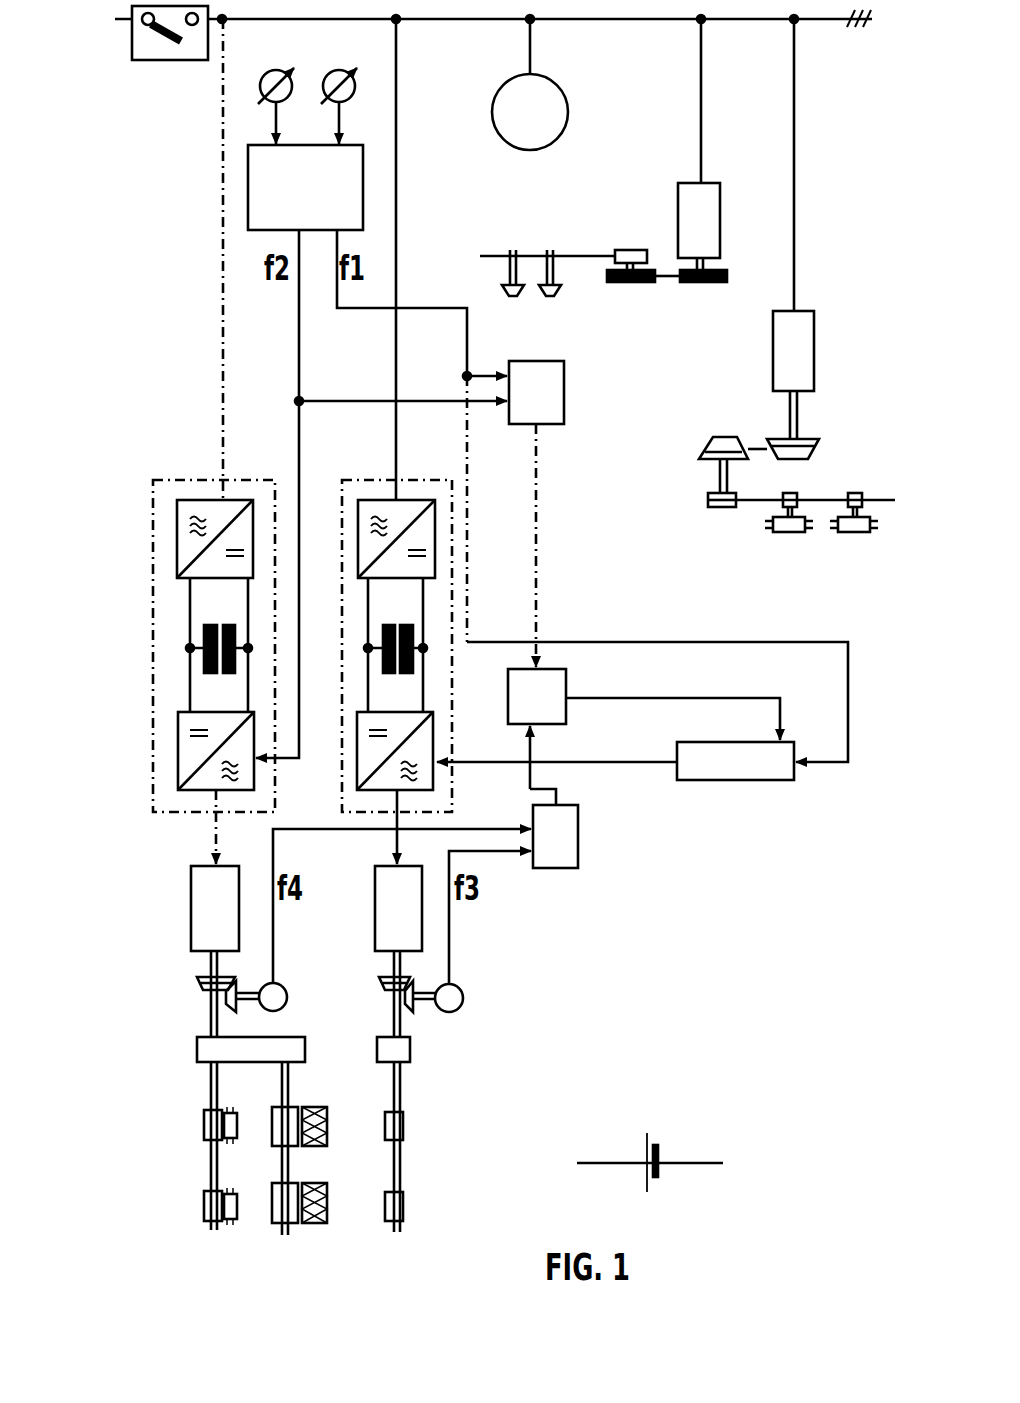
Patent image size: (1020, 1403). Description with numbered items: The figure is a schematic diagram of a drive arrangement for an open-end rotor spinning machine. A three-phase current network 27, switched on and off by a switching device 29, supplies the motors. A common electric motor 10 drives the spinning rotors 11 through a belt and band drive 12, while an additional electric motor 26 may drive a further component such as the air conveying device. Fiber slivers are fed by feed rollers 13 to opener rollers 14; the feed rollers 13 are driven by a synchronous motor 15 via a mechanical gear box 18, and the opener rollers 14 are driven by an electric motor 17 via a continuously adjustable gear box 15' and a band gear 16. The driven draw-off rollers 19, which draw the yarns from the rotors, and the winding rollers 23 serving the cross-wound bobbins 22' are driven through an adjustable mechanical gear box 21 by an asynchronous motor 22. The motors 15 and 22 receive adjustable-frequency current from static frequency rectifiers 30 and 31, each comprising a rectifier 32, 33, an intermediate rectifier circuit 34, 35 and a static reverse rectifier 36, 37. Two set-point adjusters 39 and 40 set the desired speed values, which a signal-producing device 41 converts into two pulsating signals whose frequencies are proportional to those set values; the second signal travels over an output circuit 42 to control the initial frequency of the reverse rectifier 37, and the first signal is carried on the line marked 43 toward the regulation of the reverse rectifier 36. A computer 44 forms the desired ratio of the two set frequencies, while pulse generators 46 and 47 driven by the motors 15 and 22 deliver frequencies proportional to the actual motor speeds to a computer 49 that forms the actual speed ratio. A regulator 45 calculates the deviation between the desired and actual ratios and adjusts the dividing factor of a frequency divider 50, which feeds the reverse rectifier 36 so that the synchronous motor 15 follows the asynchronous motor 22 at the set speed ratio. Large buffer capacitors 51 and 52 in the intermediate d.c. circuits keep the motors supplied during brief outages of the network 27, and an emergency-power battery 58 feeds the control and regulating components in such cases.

The electric motor 10 is at (715, 220).
The spinning rotors 11 is at (551, 293).
The belt and band drive 12 is at (636, 285).
The feed rollers 13 is at (403, 1125).
The opener rollers 14 is at (855, 533).
The synchronous motor 15 is at (405, 913).
The continuously adjustable gear box 15' is at (726, 429).
The band gear 16 is at (722, 508).
The electric motor 17 is at (808, 352).
The mechanical gear box 18 is at (405, 1048).
The draw-off rollers 19 is at (205, 1125).
The adjustable mechanical gear box 21 is at (198, 1050).
The asynchronous motor 22 is at (225, 913).
The cross-wound bobbins 22' is at (336, 1197).
The winding rollers 23 is at (280, 1207).
The electric motor 26 is at (517, 129).
The three-phase current network 27 is at (832, 21).
The switching device 29 is at (162, 61).
The static frequency rectifier 30 is at (408, 477).
The static frequency rectifier 31 is at (150, 652).
The rectifier 32 is at (437, 535).
The rectifier 33 is at (180, 546).
The intermediate rectifier circuit 34 is at (360, 632).
The intermediate rectifier circuit 35 is at (188, 615).
The static reverse rectifier 36 is at (418, 790).
The static reverse rectifier 37 is at (180, 768).
The set-point adjuster 39 is at (327, 74).
The set-point adjuster 40 is at (262, 76).
The signal-producing device 41 is at (287, 201).
The output circuit 42 is at (298, 350).
The control line f1 43 is at (361, 310).
The computer 44 is at (523, 404).
The regulator 45 is at (524, 712).
The pulse generator 46 is at (458, 992).
The pulse generator 47 is at (284, 987).
The computer 49 is at (543, 853).
The frequency divider 50 is at (745, 773).
The buffer capacitor 51 is at (410, 675).
The buffer capacitor 52 is at (200, 668).
The emergency-power battery 58 is at (660, 1152).